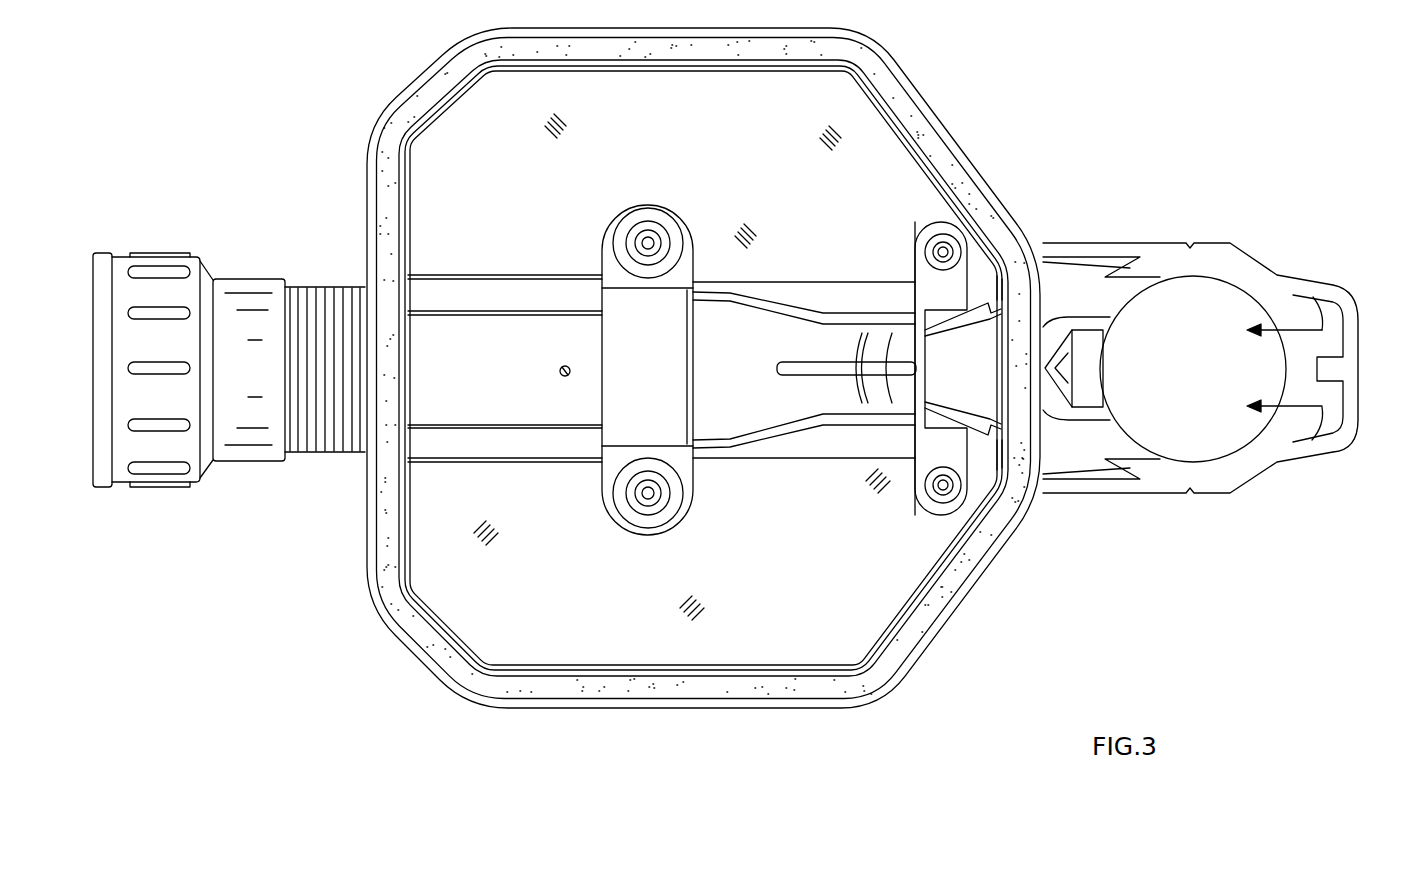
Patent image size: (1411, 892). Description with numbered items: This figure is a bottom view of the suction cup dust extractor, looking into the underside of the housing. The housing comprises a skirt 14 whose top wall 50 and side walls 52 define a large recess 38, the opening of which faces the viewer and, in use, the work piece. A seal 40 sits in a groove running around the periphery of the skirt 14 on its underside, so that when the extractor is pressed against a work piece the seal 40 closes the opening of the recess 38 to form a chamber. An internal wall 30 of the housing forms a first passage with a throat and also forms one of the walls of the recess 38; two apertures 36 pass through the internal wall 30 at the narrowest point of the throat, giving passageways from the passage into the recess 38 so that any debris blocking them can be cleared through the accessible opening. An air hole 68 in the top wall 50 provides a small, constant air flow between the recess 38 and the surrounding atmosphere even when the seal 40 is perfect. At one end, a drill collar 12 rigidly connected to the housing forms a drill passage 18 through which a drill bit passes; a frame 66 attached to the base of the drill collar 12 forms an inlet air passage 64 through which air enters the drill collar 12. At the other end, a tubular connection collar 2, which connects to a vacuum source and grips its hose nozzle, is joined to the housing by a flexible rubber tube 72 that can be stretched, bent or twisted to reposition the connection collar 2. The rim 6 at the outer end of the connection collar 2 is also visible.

The tubular connection collar 2 is at (123, 468).
The coupling rim 6 is at (103, 473).
The drill collar 12 is at (1212, 485).
The skirt 14 is at (620, 150).
The drill passage 18 is at (1171, 361).
The internal wall 30 is at (746, 358).
The apertures 36 is at (866, 345).
The recess 38 is at (508, 226).
The seal 40 is at (422, 108).
The top wall 50 is at (450, 548).
The side walls 52 is at (372, 153).
The inlet air passage 64 is at (1313, 308).
The frame 66 is at (1343, 308).
The air hole 68 is at (565, 366).
The flexible tube 72 is at (317, 440).